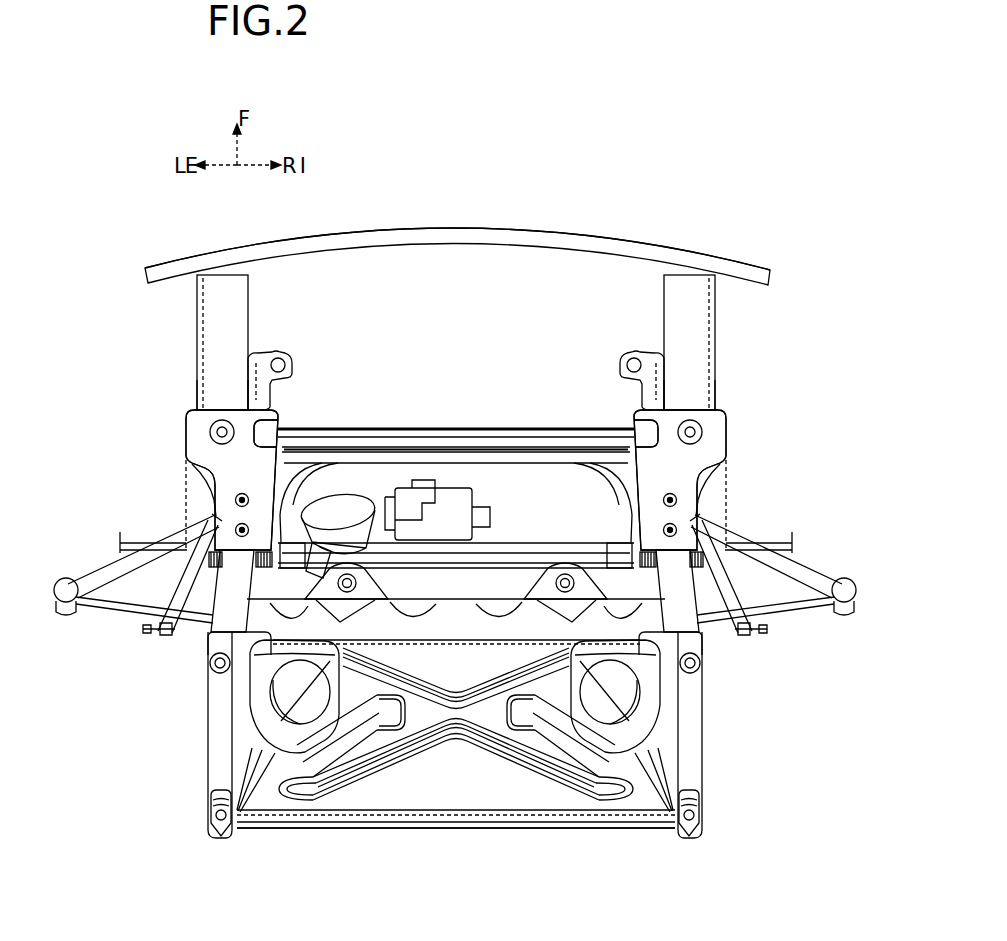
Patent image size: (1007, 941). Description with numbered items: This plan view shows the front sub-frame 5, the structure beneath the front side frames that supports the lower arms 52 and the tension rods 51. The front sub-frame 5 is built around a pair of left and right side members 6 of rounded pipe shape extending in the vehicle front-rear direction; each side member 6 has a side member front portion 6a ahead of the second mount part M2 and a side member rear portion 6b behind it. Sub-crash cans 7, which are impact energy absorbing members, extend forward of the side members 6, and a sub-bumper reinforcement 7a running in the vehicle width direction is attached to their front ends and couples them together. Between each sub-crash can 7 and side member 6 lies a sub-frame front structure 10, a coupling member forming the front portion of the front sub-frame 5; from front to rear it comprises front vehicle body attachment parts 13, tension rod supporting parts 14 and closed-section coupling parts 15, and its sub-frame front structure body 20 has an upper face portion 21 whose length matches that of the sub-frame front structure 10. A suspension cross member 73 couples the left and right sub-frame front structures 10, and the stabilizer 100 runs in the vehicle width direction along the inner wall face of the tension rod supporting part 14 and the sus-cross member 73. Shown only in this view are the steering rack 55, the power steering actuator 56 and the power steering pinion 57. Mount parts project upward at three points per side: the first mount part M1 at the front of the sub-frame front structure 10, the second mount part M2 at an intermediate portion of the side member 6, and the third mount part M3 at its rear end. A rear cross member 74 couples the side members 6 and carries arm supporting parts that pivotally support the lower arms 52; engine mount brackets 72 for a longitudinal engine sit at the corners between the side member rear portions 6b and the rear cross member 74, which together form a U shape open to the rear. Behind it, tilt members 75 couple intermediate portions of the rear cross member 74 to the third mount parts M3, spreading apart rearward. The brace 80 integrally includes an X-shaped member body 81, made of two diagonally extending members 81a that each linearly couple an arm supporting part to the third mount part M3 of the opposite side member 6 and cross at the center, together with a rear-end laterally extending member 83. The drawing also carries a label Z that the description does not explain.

The front sub-frame 5 is at (632, 162).
The sub-crash can 7 is at (250, 300).
The sub-bumper reinforcement 7a is at (492, 228).
The sub-frame front structure body 20 is at (212, 409).
The upper face portion 21 is at (243, 422).
The front vehicle body attachment part 13 is at (187, 412).
The sub-frame front structure 10 is at (117, 449).
The first mount part M1 is at (210, 432).
The region Z is at (182, 472).
The tension rod supporting part 14 is at (198, 480).
The closed-section coupling part 15 is at (215, 517).
The suspension cross member 73 is at (420, 428).
The stabilizer 100 is at (522, 470).
The steering rack 55 is at (527, 540).
The power steering actuator 56 is at (472, 483).
The power steering pinion 57 is at (332, 492).
The rear cross member 74 is at (422, 600).
The brace 80 is at (571, 829).
The rear-end laterally extending member 83 is at (425, 829).
The X-shaped member body 81 is at (352, 772).
The diagonally extending member 81a is at (388, 758).
The engine mount bracket 72 is at (318, 733).
The tilt member 75 is at (327, 697).
The side member 6 is at (207, 739).
The side member front portion 6a is at (222, 574).
The side member rear portion 6b is at (207, 702).
The second mount part M2 is at (210, 663).
The third mount part M3 is at (215, 814).
The tension rod 51 is at (107, 565).
The lower arm 52 is at (108, 617).